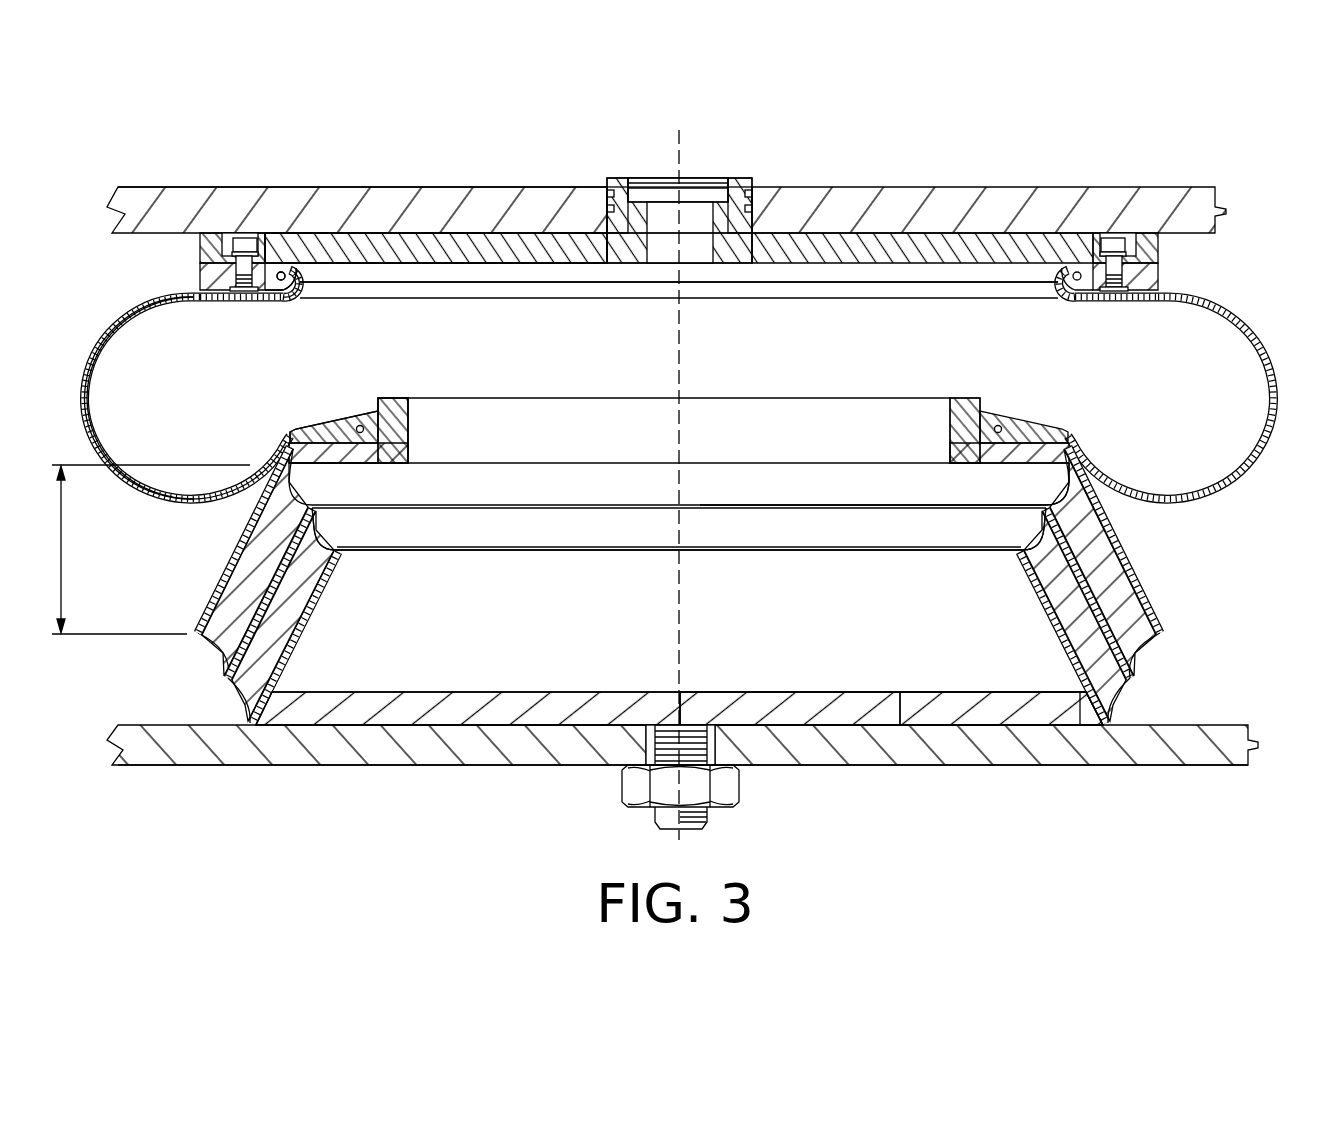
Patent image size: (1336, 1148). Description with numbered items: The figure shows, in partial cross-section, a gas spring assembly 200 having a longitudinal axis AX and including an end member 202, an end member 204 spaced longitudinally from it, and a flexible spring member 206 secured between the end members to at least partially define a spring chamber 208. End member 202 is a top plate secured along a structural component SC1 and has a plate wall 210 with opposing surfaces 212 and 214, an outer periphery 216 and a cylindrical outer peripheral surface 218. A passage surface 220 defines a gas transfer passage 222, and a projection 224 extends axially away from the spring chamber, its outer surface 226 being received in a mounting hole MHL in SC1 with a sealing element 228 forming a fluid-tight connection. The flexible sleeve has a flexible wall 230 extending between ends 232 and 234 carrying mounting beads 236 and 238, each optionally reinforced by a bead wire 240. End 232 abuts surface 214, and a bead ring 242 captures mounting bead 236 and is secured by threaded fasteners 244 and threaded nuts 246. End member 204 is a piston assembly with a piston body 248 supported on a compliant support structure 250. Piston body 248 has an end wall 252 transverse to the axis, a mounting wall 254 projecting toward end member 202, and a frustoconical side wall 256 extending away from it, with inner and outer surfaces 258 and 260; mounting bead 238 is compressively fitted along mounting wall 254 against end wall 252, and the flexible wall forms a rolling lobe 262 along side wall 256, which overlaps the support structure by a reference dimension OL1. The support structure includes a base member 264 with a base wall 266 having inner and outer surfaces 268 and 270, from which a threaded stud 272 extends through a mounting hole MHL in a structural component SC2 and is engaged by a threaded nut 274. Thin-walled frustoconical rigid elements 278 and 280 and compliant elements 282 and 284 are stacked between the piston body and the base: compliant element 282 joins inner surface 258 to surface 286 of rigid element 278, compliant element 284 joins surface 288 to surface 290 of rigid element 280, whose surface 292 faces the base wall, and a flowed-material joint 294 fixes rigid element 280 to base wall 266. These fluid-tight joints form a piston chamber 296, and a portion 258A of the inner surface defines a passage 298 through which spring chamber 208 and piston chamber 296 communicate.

The gas spring assembly 200 is at (1247, 237).
The end member 202 is at (885, 237).
The end member 204 is at (1201, 602).
The flexible spring member 206 is at (1247, 319).
The spring chamber 208 is at (150, 350).
The plate wall 210 is at (420, 245).
The surface 212 is at (365, 245).
The surface 214 is at (500, 255).
The outer periphery 216 is at (210, 231).
The outer peripheral surface 218 is at (200, 250).
The passage surface 220 is at (703, 215).
The gas transfer passage 222 is at (660, 176).
The projection 224 is at (627, 223).
The outer surface 226 is at (773, 267).
The sealing element 228 is at (607, 213).
The flexible wall 230 is at (85, 378).
The end 232 is at (296, 303).
The end 234 is at (360, 391).
The mounting bead 236 is at (286, 253).
The mounting bead 238 is at (314, 426).
The bead wire 240 is at (275, 290).
The bead ring 242 is at (1150, 298).
The threaded fastener 244 is at (200, 273).
The threaded nut 246 is at (1127, 238).
The piston body 248 is at (345, 471).
The compliant support structure 250 is at (1050, 639).
The end wall 252 is at (1022, 452).
The mounting wall 254 is at (964, 412).
The side wall 256 is at (1130, 587).
The inner surface 258 is at (1027, 463).
The portion of inner surface 258A is at (409, 430).
The outer surface 260 is at (1090, 558).
The rolling lobe 262 is at (167, 490).
The base member 264 is at (372, 712).
The base wall 266 is at (880, 712).
The inner surface 268 is at (480, 690).
The outer surface 270 is at (950, 710).
The threaded stud 272 is at (653, 815).
The threaded nut 274 is at (633, 785).
The rigid element 278 is at (1145, 642).
The rigid element 280 is at (1133, 676).
The compliant element 282 is at (1100, 558).
The compliant element 284 is at (1067, 593).
The surface 286 is at (282, 547).
The surface 288 is at (290, 598).
The surface 290 is at (272, 622).
The surface 292 is at (276, 688).
The flowed-material joint 294 is at (1090, 688).
The piston chamber 296 is at (779, 662).
The passage 298 is at (855, 426).
The structural component SC1 is at (190, 205).
The structural component SC2 is at (230, 750).
The mounting hole MHL is at (753, 203).
The longitudinal axis AX is at (708, 485).
The reference dimension OL1 is at (142, 549).